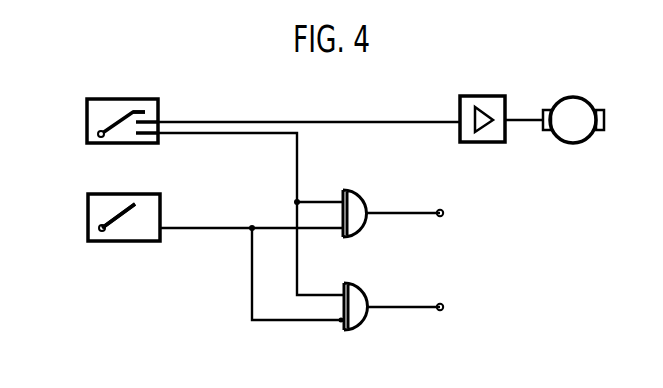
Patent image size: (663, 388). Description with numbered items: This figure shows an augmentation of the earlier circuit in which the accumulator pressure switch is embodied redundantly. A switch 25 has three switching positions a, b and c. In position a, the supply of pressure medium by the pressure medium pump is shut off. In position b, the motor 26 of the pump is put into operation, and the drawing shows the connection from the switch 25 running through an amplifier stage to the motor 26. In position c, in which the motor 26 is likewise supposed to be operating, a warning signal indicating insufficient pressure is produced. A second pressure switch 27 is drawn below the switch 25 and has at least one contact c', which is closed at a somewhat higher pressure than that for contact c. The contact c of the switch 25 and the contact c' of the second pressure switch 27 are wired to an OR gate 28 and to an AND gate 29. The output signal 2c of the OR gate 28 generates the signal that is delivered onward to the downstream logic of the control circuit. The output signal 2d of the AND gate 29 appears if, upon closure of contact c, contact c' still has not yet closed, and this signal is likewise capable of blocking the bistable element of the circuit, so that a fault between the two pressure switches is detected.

The switch 25 is at (113, 108).
The switching position a is at (138, 108).
The switching position b is at (150, 118).
The switching position c is at (157, 142).
The second pressure switch 27 is at (122, 230).
The contact c' is at (144, 209).
The OR gate 28 is at (360, 210).
The AND gate 29 is at (358, 315).
The output signal 2c is at (443, 210).
The output signal 2d is at (442, 304).
The motor 26 is at (573, 110).